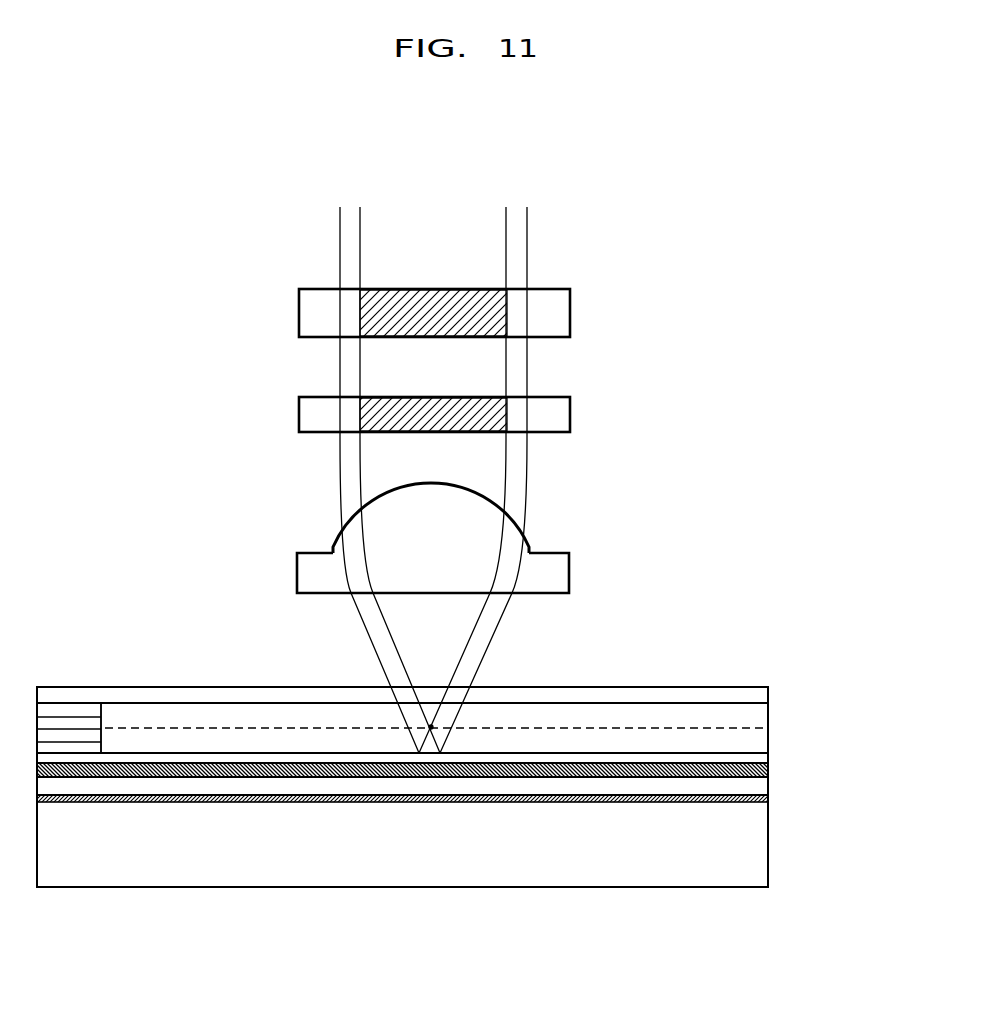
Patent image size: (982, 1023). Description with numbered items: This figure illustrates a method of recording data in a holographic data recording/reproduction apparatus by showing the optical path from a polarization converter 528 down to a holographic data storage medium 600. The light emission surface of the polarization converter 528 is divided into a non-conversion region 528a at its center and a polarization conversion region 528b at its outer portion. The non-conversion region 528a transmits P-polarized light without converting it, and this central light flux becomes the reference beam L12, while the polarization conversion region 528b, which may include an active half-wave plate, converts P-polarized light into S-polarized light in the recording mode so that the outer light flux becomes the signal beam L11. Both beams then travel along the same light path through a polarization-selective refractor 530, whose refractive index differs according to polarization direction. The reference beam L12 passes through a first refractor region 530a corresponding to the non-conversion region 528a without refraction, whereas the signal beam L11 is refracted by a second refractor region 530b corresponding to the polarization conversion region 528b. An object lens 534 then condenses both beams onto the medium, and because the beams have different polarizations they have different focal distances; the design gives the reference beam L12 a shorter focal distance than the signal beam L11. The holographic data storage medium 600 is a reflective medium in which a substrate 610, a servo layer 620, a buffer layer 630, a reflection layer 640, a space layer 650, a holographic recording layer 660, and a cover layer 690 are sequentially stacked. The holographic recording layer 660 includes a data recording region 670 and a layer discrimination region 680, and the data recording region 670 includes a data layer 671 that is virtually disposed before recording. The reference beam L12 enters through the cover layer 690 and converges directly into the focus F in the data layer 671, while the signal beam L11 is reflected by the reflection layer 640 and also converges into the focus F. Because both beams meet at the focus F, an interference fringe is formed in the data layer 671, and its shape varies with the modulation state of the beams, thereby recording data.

The polarization converter 528 is at (540, 268).
The non-conversion region 528a is at (437, 288).
The polarization conversion region 528b is at (517, 289).
The polarization-selective refractor 530 is at (540, 372).
The first refractor region 530a is at (437, 397).
The second refractor region 530b is at (517, 398).
The object lens 534 is at (568, 573).
The signal beam L11 is at (352, 484).
The reference beam L12 is at (473, 457).
The focus F is at (434, 727).
The holographic data storage medium 600 is at (464, 721).
The substrate 610 is at (762, 852).
The servo layer 620 is at (762, 803).
The buffer layer 630 is at (762, 785).
The reflection layer 640 is at (762, 771).
The space layer 650 is at (762, 760).
The holographic recording layer 660 is at (464, 696).
The data recording region 670 is at (155, 713).
The data layer 671 is at (227, 722).
The layer discrimination region 680 is at (70, 712).
The cover layer 690 is at (762, 695).